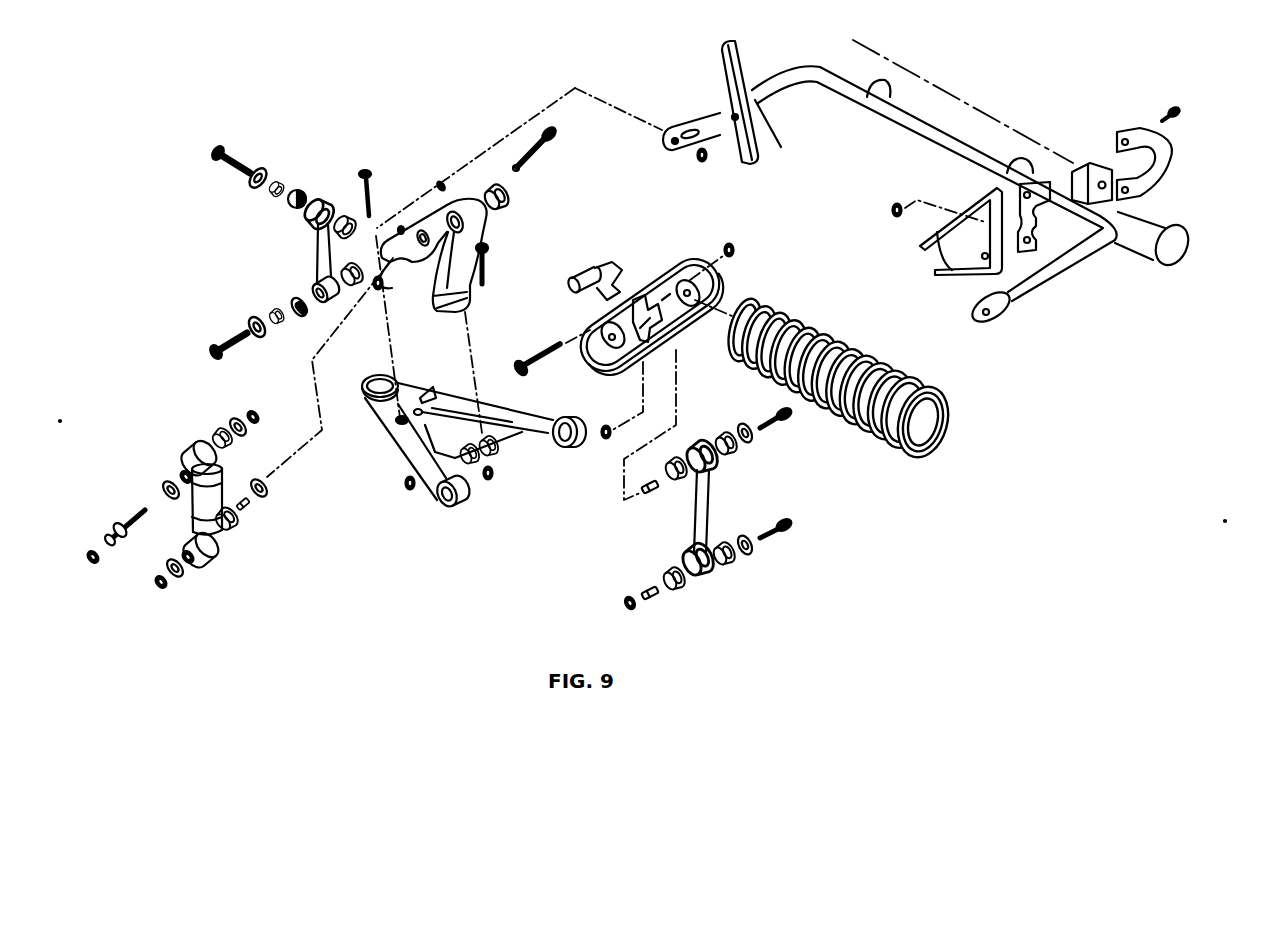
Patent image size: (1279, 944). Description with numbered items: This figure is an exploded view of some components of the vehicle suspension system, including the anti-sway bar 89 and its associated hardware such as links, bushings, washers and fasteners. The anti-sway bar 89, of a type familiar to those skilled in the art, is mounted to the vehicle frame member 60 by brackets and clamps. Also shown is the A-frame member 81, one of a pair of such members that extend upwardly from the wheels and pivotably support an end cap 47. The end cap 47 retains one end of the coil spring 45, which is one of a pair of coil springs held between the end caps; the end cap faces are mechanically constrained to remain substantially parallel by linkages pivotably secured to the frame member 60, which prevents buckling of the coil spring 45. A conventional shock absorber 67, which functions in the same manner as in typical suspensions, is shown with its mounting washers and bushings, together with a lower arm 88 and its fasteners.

The coil spring 45 is at (790, 296).
The end cap 47 is at (660, 275).
The vehicle frame member 60 is at (1172, 246).
The shock absorber 67 is at (215, 495).
The A-frame member 81 is at (492, 222).
The lower control arm 88 is at (400, 446).
The anti-sway bar 89 is at (1003, 318).